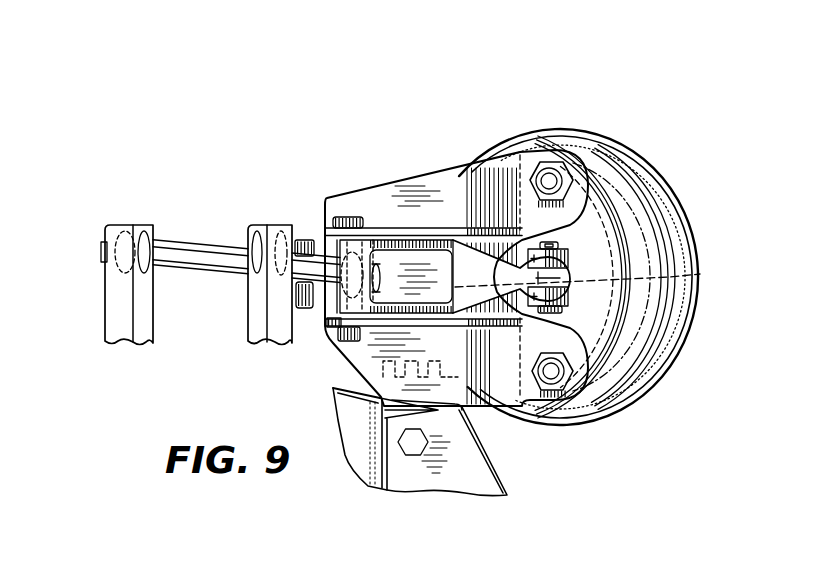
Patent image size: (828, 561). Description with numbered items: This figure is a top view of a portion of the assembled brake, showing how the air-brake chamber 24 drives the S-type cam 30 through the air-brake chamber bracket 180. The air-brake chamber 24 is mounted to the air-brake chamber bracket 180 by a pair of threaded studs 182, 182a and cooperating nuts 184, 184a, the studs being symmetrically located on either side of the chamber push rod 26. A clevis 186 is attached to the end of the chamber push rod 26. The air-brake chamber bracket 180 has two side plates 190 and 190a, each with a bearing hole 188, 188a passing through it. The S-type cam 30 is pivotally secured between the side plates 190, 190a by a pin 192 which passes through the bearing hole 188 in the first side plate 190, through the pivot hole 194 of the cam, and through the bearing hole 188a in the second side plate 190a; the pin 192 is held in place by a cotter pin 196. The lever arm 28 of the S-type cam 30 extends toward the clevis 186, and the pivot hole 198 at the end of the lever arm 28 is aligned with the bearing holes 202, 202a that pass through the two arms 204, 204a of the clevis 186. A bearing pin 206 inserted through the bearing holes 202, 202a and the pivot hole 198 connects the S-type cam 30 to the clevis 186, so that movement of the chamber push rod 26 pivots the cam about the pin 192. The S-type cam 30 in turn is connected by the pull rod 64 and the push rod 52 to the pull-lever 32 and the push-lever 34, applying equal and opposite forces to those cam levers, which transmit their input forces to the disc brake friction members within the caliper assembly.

The air-brake chamber 24 is at (675, 347).
The chamber push rod 26 is at (560, 275).
The lever arm 28 is at (467, 243).
The S-type cam 30 is at (419, 233).
The pull-lever 32 is at (253, 226).
The push-lever 34 is at (113, 225).
The push rod 52 is at (184, 246).
The pull rod 64 is at (299, 240).
The air-brake chamber bracket 180 is at (489, 183).
The threaded stud 182 is at (547, 170).
The threaded stud 182a is at (560, 375).
The nut 184 is at (562, 165).
The nut 184a is at (553, 391).
The clevis 186 is at (580, 246).
The bearing hole 188 is at (373, 240).
The bearing hole 188a is at (333, 329).
The side plate 190 is at (386, 227).
The side plate 190a is at (417, 324).
The pin 192 is at (398, 352).
The pivot hole 194 is at (343, 215).
The cotter pin 196 is at (350, 343).
The pivot hole 198 is at (656, 273).
The bearing hole 202 is at (503, 263).
The bearing hole 202a is at (528, 287).
The arm 204 is at (572, 252).
The arm 204a is at (572, 300).
The bearing pin 206 is at (572, 305).